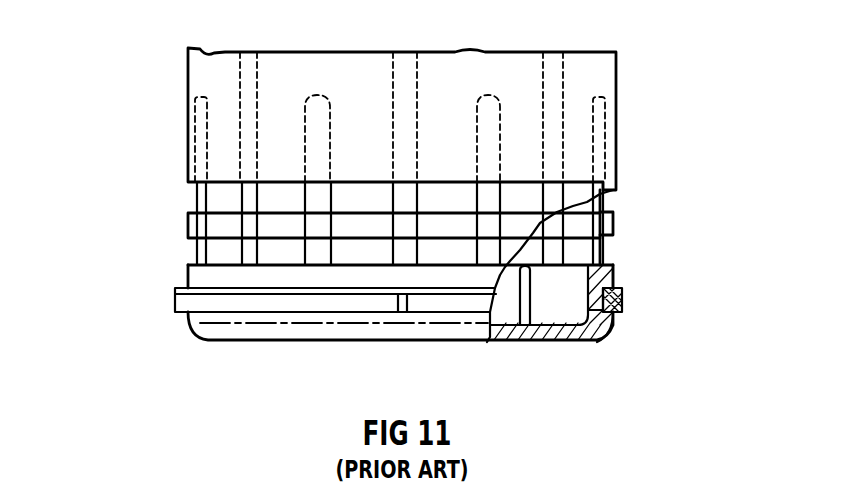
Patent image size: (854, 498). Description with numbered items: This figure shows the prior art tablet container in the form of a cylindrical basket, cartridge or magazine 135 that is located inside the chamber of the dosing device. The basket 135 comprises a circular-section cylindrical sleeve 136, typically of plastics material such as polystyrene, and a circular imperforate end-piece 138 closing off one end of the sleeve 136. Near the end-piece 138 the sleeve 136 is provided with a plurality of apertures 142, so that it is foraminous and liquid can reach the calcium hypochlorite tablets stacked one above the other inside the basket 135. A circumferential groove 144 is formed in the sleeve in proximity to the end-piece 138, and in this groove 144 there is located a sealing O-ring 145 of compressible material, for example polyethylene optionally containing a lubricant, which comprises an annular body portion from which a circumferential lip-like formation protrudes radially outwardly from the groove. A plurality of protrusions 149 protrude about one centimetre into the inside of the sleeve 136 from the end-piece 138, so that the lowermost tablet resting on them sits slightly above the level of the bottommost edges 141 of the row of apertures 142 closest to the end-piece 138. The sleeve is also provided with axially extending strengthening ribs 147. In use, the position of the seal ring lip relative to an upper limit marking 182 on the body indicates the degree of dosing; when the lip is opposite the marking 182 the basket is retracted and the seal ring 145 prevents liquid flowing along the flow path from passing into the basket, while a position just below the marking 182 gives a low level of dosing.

The basket 135 is at (669, 106).
The sleeve 136 is at (595, 75).
The end-piece 138 is at (490, 340).
The bottommost edges 141 is at (358, 263).
The apertures 142 is at (275, 195).
The circumferential groove 144 is at (590, 310).
The sealing O-ring 145 is at (653, 293).
The strengthening ribs 147 is at (408, 112).
The protrusions 149 is at (523, 292).
The upper limit marking 182 is at (445, 252).